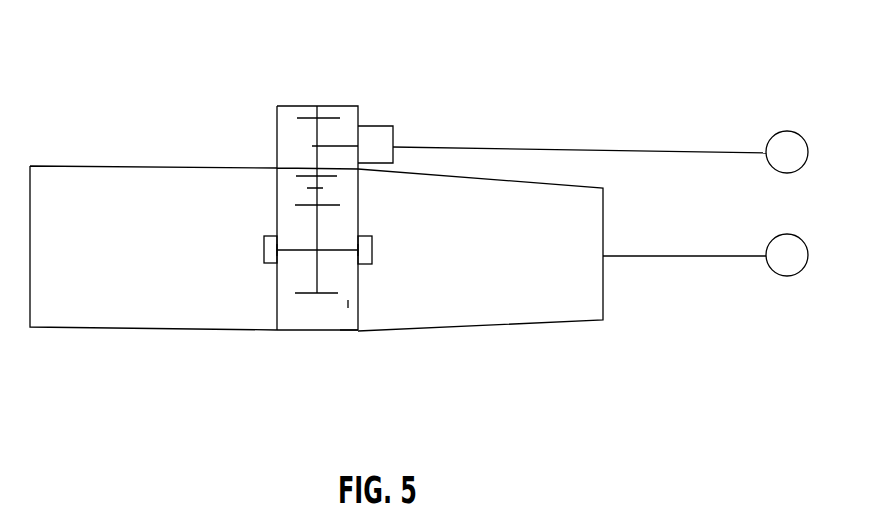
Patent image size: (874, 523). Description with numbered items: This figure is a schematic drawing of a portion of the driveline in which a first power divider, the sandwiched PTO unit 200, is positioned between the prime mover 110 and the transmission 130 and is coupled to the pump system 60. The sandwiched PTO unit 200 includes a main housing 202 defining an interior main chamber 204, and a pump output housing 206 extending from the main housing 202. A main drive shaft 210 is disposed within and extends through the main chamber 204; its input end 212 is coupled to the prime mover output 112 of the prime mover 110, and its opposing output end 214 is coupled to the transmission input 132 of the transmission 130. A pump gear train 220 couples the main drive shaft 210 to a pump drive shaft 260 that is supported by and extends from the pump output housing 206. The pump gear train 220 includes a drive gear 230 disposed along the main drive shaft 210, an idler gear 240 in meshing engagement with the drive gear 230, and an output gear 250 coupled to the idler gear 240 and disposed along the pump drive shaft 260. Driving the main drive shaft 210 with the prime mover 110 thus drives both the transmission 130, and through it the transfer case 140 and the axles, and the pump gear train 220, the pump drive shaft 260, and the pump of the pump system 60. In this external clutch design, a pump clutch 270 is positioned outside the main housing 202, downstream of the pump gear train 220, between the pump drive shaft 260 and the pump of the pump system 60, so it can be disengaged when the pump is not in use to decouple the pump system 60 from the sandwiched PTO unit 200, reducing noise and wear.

The pump system 60 is at (786, 131).
The prime mover 110 is at (112, 185).
The prime mover output 112 is at (263, 258).
The transmission 130 is at (423, 314).
The transmission input 132 is at (367, 236).
The transfer case 140 is at (782, 277).
The sandwiched PTO unit 200 is at (248, 157).
The main housing 202 is at (345, 332).
The main chamber 204 is at (349, 310).
The pump output housing 206 is at (317, 108).
The main drive shaft 210 is at (288, 250).
The input end 212 is at (283, 256).
The output end 214 is at (349, 256).
The pump gear train 220 is at (348, 203).
The drive gear 230 is at (312, 293).
The idler gear 240 is at (298, 172).
The output gear 250 is at (308, 118).
The pump drive shaft 260 is at (338, 145).
The pump clutch 270 is at (390, 128).